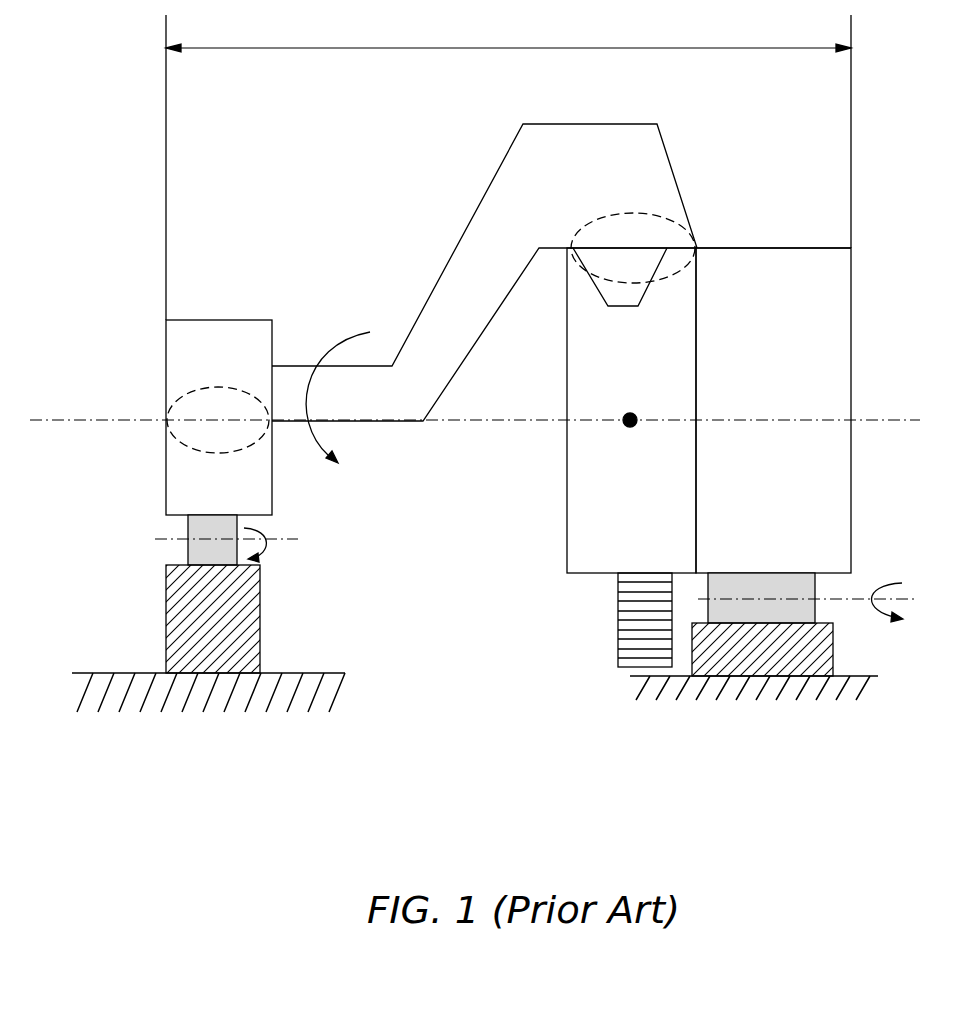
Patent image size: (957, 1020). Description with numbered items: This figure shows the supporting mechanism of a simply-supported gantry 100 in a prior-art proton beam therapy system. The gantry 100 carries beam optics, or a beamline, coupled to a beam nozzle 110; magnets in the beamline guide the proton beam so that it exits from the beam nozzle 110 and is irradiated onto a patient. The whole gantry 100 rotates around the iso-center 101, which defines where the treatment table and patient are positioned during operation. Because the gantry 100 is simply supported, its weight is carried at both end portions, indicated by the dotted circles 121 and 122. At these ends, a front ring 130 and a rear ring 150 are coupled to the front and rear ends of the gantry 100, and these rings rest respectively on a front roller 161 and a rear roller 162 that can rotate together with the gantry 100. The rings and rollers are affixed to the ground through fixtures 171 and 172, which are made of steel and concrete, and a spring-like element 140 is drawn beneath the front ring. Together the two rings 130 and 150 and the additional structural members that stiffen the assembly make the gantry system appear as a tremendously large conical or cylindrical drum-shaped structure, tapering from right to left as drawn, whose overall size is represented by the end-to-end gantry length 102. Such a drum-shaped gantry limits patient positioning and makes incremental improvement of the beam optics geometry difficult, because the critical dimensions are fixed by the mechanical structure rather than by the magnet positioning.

The gantry 100 is at (632, 124).
The iso-center 101 is at (633, 428).
The end-to-end gantry length 102 is at (519, 48).
The beam nozzle 110 is at (639, 308).
The dotted circle 121 is at (634, 213).
The dotted circle 122 is at (172, 403).
The ring 130 is at (648, 537).
The spring 140 is at (618, 646).
The rear ring 150 is at (230, 372).
The front roller 161 is at (815, 590).
The rear roller 162 is at (187, 553).
The fixture 171 is at (835, 658).
The fixture 172 is at (166, 625).